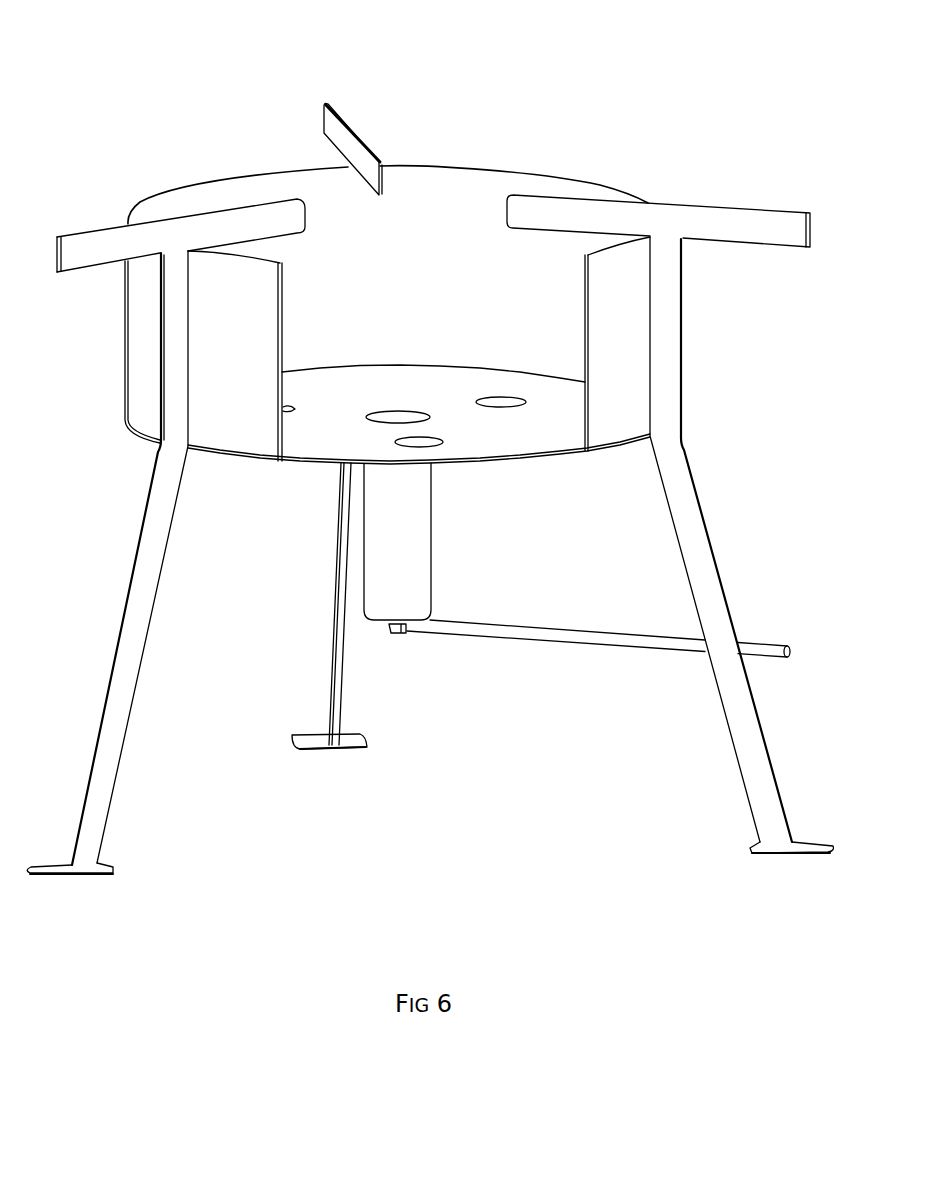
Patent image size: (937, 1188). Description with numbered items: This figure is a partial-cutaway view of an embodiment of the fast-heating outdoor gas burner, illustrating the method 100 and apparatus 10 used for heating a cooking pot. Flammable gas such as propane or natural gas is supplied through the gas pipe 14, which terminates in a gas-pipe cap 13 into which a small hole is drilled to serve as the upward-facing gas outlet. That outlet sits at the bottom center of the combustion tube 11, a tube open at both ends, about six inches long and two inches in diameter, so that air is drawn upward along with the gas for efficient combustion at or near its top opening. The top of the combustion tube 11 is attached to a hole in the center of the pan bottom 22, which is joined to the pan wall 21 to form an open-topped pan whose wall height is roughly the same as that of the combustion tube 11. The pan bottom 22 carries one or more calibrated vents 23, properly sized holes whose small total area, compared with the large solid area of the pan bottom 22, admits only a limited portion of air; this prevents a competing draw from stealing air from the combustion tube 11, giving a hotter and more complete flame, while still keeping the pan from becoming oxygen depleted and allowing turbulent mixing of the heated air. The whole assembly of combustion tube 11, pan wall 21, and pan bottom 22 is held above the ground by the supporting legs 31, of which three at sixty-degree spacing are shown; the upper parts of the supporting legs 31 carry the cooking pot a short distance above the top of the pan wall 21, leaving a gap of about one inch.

The fast-heating outdoor gas burner method 100 is at (116, 41).
The apparatus 10 is at (123, 108).
The combustion tube 11 is at (427, 537).
The gas-pipe cap 13 is at (400, 636).
The gas pipe 14 is at (577, 636).
The pan wall 21 is at (265, 446).
The pan bottom 22 is at (343, 440).
The calibrated vents 23 is at (500, 402).
The supporting legs 31 is at (140, 608).